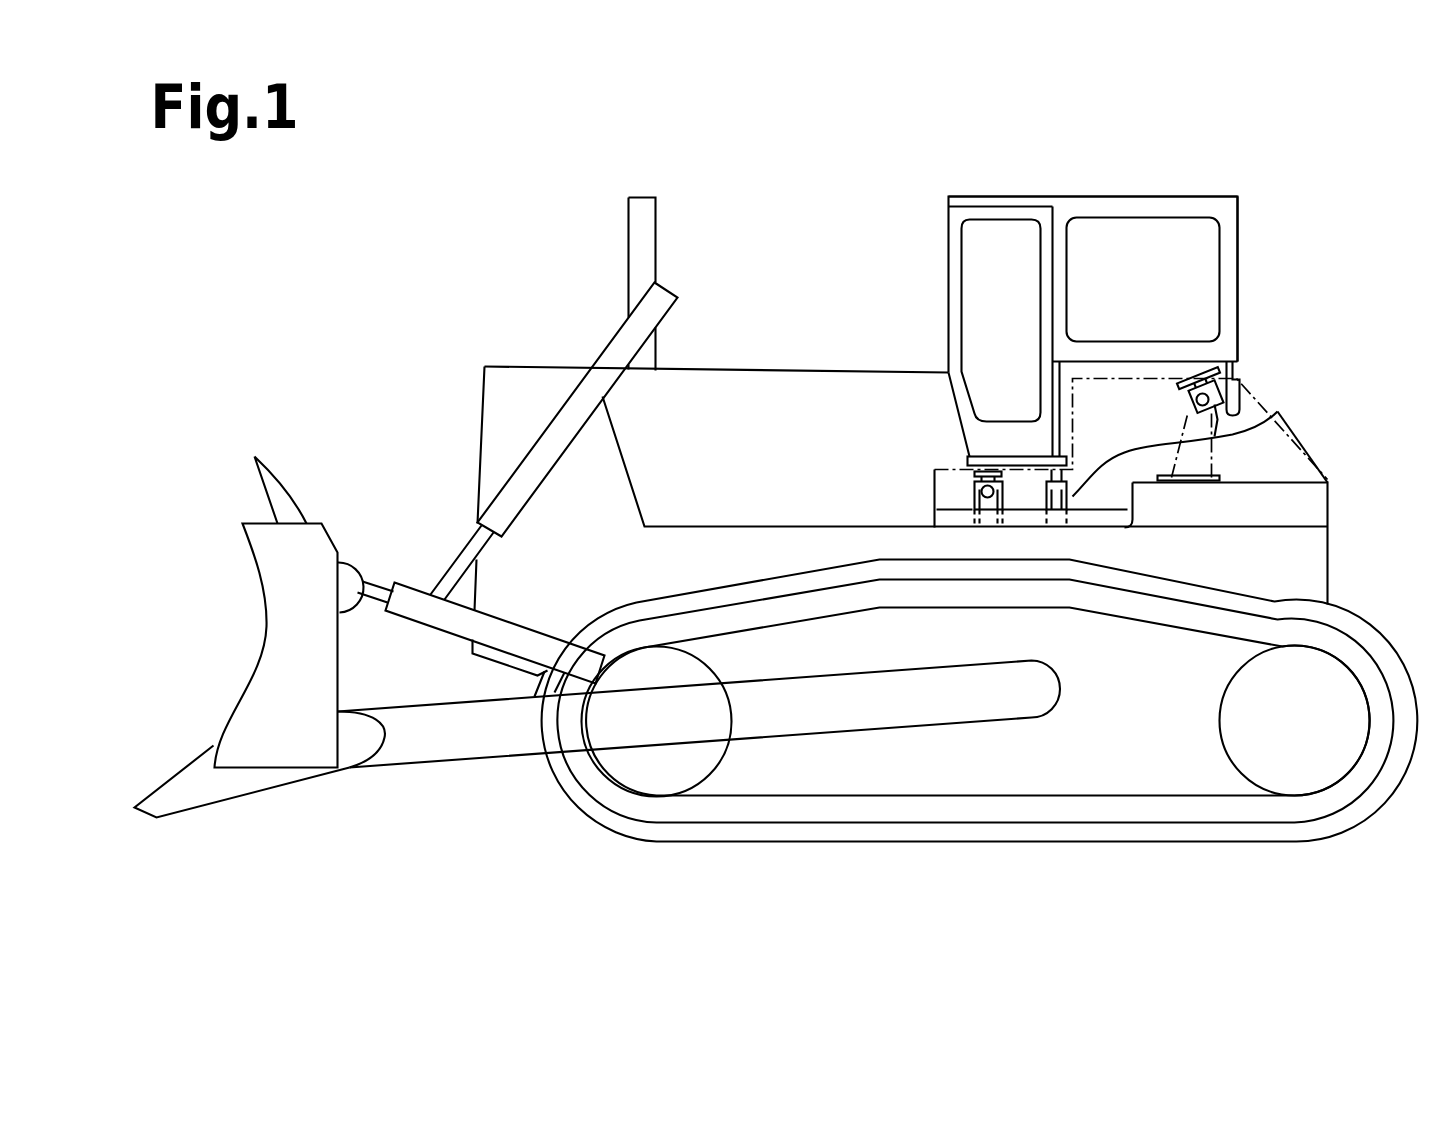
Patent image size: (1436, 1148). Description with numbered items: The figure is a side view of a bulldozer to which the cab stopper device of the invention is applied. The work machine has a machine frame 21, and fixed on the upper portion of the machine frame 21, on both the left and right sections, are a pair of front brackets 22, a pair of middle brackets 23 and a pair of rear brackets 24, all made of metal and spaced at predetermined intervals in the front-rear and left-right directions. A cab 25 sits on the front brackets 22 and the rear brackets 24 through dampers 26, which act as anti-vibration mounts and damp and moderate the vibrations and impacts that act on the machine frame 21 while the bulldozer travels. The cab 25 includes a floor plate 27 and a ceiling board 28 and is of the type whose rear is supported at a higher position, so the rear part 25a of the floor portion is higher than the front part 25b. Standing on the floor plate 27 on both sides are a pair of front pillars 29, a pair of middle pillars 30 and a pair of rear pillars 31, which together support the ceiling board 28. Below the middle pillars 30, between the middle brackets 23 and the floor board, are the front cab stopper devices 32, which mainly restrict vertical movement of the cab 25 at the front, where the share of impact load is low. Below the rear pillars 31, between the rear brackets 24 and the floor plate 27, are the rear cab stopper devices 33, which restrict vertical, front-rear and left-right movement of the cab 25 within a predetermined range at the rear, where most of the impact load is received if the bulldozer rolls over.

The machine frame 21 is at (1328, 538).
The front brackets 22 is at (975, 493).
The middle brackets 23 is at (1073, 497).
The rear brackets 24 is at (1188, 432).
The cab 25 is at (949, 232).
The rear part of the floor portion 25a is at (1162, 362).
The front part of the floor portion 25b is at (1015, 457).
The dampers 26 is at (988, 498).
The floor plate 27 is at (1102, 368).
The ceiling board 28 is at (968, 197).
The front pillars 29 is at (957, 315).
The middle pillars 30 is at (1060, 270).
The rear pillars 31 is at (1238, 272).
The front cab stopper devices 32 is at (1095, 465).
The rear cab stopper devices 33 is at (1245, 365).